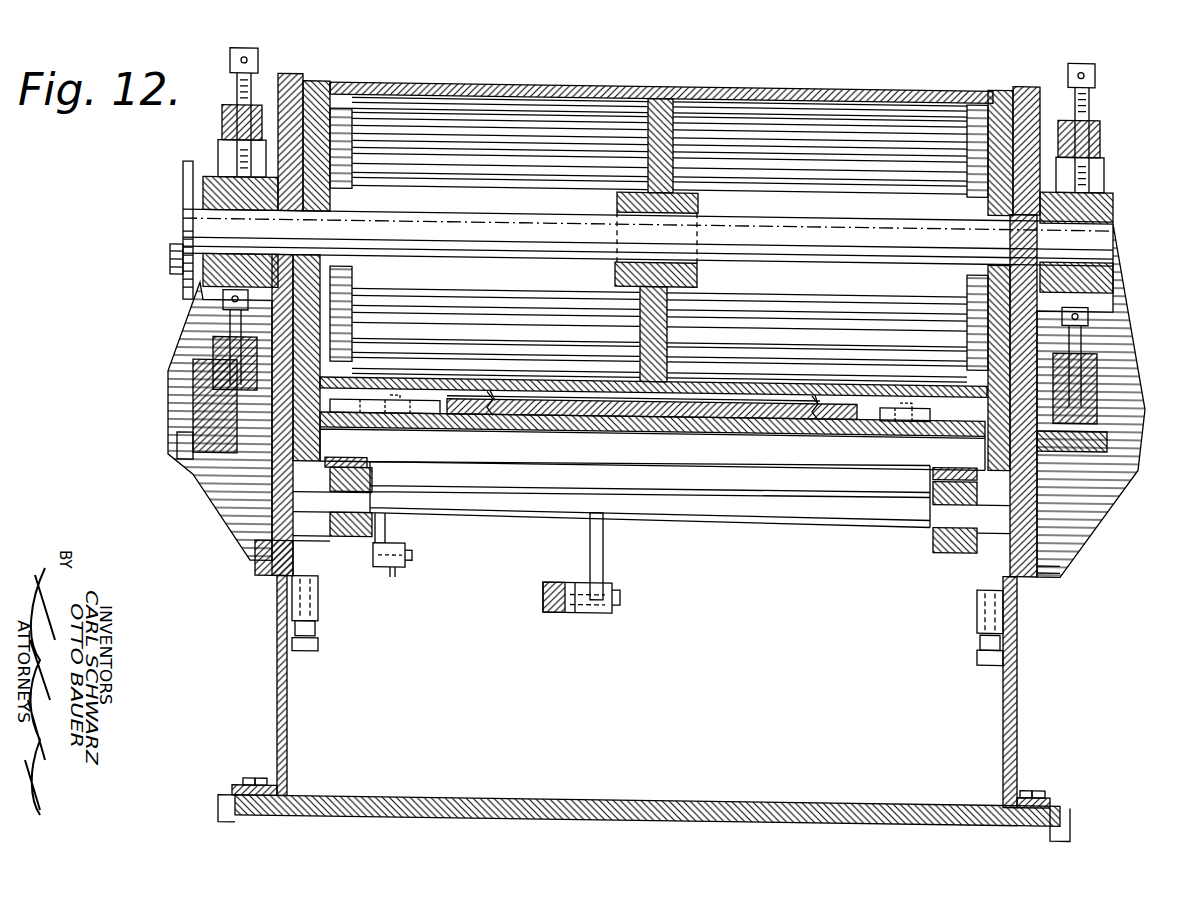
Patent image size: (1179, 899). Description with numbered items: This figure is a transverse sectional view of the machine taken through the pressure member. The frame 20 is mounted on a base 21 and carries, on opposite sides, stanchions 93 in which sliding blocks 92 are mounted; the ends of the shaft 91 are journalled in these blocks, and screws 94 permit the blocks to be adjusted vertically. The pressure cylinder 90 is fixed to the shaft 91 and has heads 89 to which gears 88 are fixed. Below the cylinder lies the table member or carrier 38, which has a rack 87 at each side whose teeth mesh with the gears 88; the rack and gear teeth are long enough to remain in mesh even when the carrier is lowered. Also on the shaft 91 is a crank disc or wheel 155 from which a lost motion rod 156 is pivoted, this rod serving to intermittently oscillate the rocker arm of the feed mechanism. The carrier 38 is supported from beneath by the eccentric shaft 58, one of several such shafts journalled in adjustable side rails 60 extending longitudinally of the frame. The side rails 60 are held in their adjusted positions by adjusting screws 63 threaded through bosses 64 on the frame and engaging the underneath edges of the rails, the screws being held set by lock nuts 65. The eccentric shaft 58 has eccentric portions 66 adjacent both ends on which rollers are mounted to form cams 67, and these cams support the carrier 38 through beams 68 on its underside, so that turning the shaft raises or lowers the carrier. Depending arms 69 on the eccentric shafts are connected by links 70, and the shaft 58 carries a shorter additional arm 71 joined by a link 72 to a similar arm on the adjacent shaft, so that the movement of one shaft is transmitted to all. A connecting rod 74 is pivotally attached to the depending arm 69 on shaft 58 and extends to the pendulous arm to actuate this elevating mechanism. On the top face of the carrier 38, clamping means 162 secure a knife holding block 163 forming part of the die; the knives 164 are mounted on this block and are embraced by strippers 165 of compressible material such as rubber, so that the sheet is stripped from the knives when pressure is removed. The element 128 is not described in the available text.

The frame 20 is at (277, 710).
The base 21 is at (218, 806).
The table member or carrier 38 is at (775, 458).
The eccentric shaft 58 is at (710, 530).
The side rails 60 is at (312, 544).
The adjusting screws 63 is at (318, 646).
The bosses 64 is at (318, 598).
The lock nuts 65 is at (316, 628).
The eccentric portions 66 is at (372, 504).
The cams 67 is at (370, 464).
The beams 68 is at (933, 476).
The depending arms 69 is at (590, 553).
The links 70 is at (550, 609).
The additional arm 71 is at (400, 541).
The link 72 is at (395, 575).
The connecting rod 74 is at (578, 609).
The rack 87 is at (195, 420).
The gears 88 is at (292, 73).
The heads 89 is at (320, 82).
The cylinder 90 is at (833, 80).
The shaft 91 is at (855, 258).
The sliding blocks 92 is at (1112, 200).
The stanchions 93 is at (222, 122).
The screws 94 is at (230, 60).
The blade 128 is at (772, 390).
The crank disc or wheel 155 is at (183, 196).
The lost motion rod 156 is at (170, 265).
The clamping means 162 is at (952, 410).
The knife holding block 163 is at (590, 412).
The knives 164 is at (490, 404).
The strippers 165 is at (815, 404).